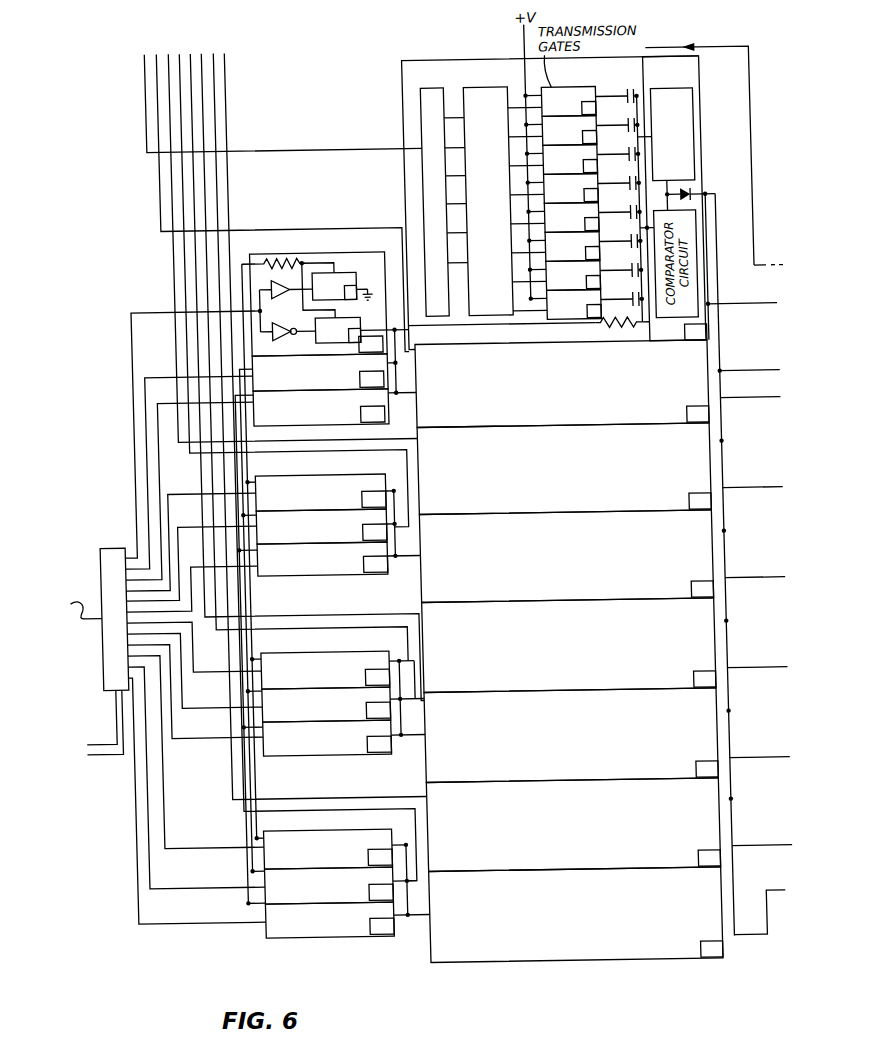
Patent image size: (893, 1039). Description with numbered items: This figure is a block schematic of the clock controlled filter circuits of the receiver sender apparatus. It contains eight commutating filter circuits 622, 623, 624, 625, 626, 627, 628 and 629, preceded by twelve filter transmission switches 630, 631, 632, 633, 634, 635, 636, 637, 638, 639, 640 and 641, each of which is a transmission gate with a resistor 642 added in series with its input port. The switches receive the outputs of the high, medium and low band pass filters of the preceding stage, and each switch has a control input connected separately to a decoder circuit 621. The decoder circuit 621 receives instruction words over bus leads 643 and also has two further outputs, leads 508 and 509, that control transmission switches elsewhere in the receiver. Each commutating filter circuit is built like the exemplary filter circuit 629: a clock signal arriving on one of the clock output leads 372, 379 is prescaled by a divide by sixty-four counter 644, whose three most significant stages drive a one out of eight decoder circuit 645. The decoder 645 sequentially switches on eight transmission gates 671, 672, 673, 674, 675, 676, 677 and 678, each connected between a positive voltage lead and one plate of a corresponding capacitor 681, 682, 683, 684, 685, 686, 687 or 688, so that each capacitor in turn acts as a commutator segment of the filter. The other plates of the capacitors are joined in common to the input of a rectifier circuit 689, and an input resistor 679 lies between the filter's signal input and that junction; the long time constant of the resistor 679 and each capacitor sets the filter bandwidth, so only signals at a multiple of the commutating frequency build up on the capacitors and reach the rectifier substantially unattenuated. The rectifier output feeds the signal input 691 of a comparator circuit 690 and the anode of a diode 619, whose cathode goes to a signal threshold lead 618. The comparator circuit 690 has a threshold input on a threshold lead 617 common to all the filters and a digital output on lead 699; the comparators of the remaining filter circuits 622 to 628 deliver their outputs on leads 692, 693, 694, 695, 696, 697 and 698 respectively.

The clock output lead 379 is at (155, 85).
The clock output lead 372 is at (236, 85).
The divide by 64 counter 644 is at (443, 88).
The one out of eight decoder circuit 645 is at (487, 88).
The transmission gate 678 is at (585, 111).
The transmission gate 677 is at (585, 140).
The transmission gate 676 is at (585, 169).
The transmission gate 675 is at (585, 198).
The transmission gate 674 is at (585, 227).
The transmission gate 673 is at (585, 256).
The transmission gate 672 is at (585, 285).
The transmission gate 671 is at (585, 314).
The capacitor 688 is at (640, 108).
The capacitor 687 is at (640, 137).
The capacitor 686 is at (640, 166).
The capacitor 685 is at (640, 195).
The capacitor 684 is at (640, 224).
The capacitor 683 is at (640, 253).
The capacitor 682 is at (640, 282).
The capacitor 681 is at (640, 311).
The input resistor 679 is at (605, 326).
The rectifier circuit 689 is at (678, 92).
The commutating filter circuit 629 is at (710, 123).
The signal input 691 is at (702, 192).
The diode 619 is at (717, 198).
The comparator circuit 690 is at (680, 331).
The threshold lead 617 is at (759, 52).
The lead 699 is at (753, 307).
The signal threshold lead 618 is at (757, 374).
The lead 698 is at (757, 401).
The lead 697 is at (767, 491).
The lead 696 is at (767, 581).
The lead 695 is at (767, 671).
The lead 694 is at (767, 761).
The lead 693 is at (767, 849).
The lead 692 is at (751, 933).
The commutating filter circuit 628 is at (662, 391).
The commutating filter circuit 627 is at (664, 475).
The commutating filter circuit 626 is at (664, 563).
The commutating filter circuit 625 is at (664, 651).
The commutating filter circuit 624 is at (664, 741).
The commutating filter circuit 623 is at (664, 831).
The commutating filter circuit 622 is at (664, 920).
The resistor 642 is at (272, 258).
The filter transmission switch 641 is at (379, 275).
The filter transmission switch 640 is at (354, 384).
The filter transmission switch 639 is at (359, 417).
The filter transmission switch 638 is at (354, 505).
The filter transmission switch 637 is at (354, 538).
The filter transmission switch 636 is at (354, 571).
The filter transmission switch 635 is at (353, 683).
The filter transmission switch 634 is at (353, 719).
The filter transmission switch 633 is at (353, 753).
The filter transmission switch 632 is at (352, 861).
The filter transmission switch 631 is at (352, 897).
The filter transmission switch 630 is at (354, 930).
The decoder circuit 621 is at (103, 543).
The bus leads 643 is at (68, 608).
The lead 509 is at (111, 734).
The lead 508 is at (117, 758).